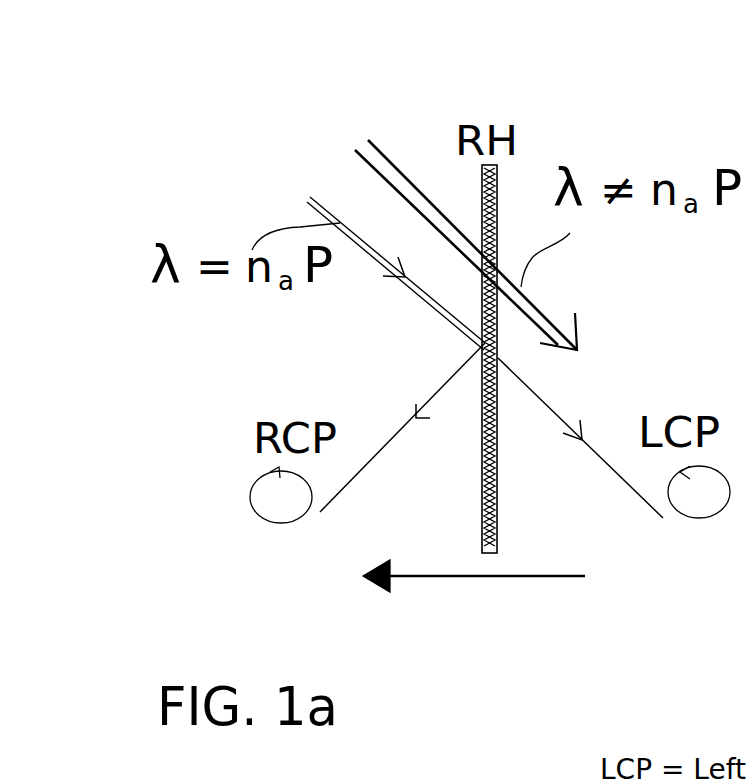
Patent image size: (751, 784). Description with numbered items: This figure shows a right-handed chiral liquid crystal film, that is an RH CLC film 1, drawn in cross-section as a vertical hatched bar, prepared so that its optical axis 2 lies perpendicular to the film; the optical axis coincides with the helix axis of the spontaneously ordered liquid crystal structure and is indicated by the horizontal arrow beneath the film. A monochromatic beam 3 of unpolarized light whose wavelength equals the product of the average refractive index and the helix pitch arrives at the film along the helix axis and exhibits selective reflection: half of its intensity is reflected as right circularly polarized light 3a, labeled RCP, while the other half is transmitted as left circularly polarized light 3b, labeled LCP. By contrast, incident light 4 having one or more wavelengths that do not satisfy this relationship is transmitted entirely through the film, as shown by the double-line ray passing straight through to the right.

The RH CLC film 1 is at (500, 170).
The optical axis 2 is at (460, 576).
The monochromatic beam 3 is at (329, 211).
The right circularly polarized light 3a is at (407, 437).
The left circularly polarized light 3b is at (585, 443).
The incident light 4 is at (397, 168).